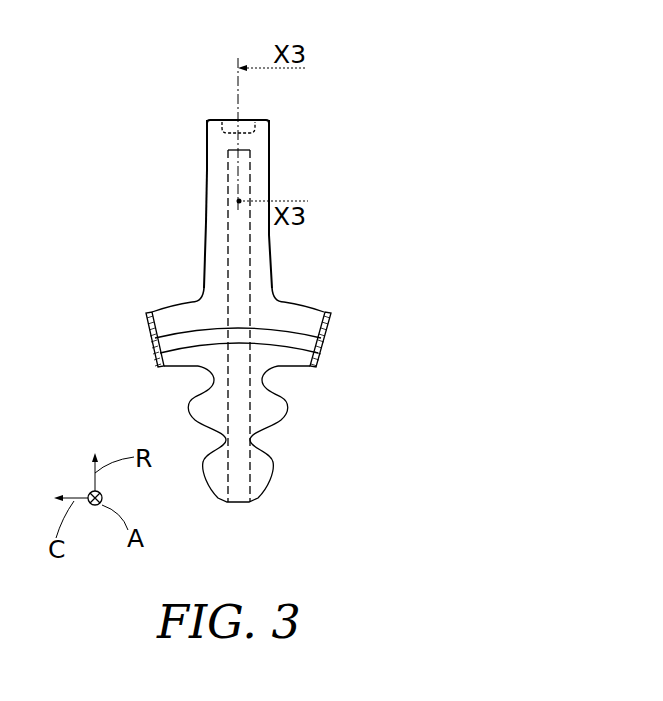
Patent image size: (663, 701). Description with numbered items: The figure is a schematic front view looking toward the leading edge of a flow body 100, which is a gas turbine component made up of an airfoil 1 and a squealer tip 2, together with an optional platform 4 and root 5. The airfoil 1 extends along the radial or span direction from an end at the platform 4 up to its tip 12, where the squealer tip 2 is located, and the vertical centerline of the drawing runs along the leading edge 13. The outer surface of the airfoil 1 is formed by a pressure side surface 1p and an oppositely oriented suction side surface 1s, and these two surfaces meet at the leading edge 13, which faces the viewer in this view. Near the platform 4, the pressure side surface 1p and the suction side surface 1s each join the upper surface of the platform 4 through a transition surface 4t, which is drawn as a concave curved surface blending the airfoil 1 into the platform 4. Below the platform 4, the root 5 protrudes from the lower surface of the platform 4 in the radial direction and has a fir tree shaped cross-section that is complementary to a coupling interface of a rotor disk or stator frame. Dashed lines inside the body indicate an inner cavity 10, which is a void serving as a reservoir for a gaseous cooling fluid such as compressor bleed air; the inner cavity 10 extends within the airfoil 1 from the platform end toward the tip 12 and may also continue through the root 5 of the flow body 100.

The flow body 100 is at (333, 72).
The airfoil 1 is at (270, 172).
The squealer tip 2 is at (268, 118).
The tip 12 is at (228, 115).
The inner cavity 10 is at (218, 168).
The suction side surface 1s is at (211, 213).
The leading edge 13 is at (215, 242).
The pressure side surface 1p is at (284, 253).
The platform 4 is at (318, 313).
The transition surface 4t is at (185, 288).
The root 5 is at (272, 450).